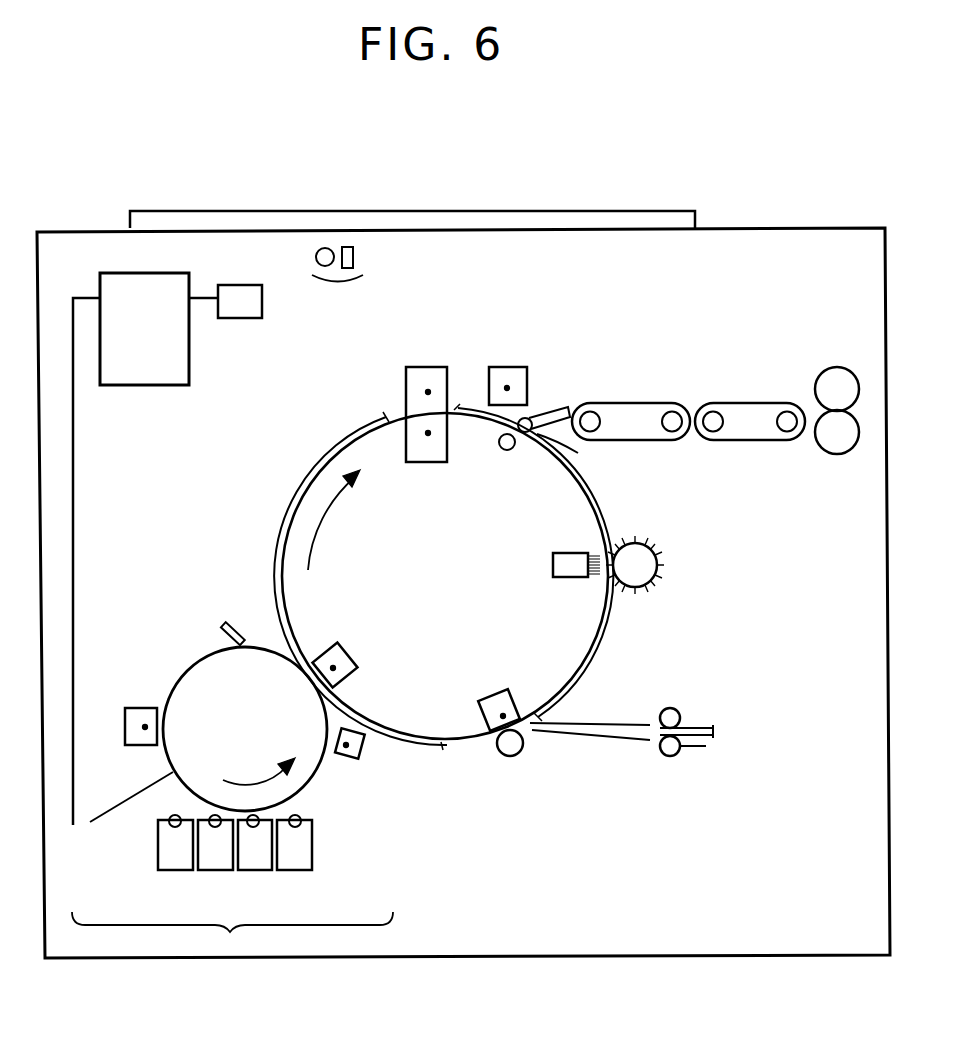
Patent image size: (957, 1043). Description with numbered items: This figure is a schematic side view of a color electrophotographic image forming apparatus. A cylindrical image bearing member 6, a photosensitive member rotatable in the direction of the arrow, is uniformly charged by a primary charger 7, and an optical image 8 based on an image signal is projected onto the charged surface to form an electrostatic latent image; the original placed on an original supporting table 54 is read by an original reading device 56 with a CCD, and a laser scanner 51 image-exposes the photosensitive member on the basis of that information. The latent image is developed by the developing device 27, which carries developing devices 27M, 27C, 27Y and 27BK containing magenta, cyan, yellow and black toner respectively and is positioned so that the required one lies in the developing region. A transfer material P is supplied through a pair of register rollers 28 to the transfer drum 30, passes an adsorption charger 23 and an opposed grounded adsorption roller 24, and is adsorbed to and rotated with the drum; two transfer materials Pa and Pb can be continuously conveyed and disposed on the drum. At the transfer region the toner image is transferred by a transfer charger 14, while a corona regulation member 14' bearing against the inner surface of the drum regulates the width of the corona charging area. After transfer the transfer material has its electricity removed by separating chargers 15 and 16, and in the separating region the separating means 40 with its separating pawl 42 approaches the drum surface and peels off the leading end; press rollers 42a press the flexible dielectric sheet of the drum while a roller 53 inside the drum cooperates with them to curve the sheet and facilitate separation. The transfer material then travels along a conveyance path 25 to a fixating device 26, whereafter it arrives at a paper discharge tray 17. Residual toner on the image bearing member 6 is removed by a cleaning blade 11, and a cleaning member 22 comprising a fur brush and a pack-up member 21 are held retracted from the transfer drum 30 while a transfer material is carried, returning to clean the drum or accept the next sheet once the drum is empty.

The image bearing member 6 is at (183, 668).
The primary charger 7 is at (128, 708).
The optical image 8 is at (136, 790).
The cleaning blade 11 is at (228, 623).
The transfer charger 14 is at (356, 652).
The corona regulation member 14' is at (363, 765).
The separating charger 15 is at (406, 447).
The separating charger 16 is at (432, 367).
The paper discharge tray 17 is at (512, 367).
The pack-up member 21 is at (553, 563).
The cleaning member 22 is at (660, 548).
The adsorption charger 23 is at (510, 694).
The grounded electrode (adsorption roller) 24 is at (520, 755).
The conveyance path 25 is at (808, 362).
The fixating device 26 is at (838, 376).
The developing device 27 is at (232, 884).
The developing device 27BK is at (158, 850).
The developing device 27Y is at (207, 862).
The developing device 27C is at (240, 868).
The developing device 27M is at (327, 863).
The register rollers 28 is at (676, 710).
The transfer drum 30 is at (600, 528).
The separating means 40 is at (553, 378).
The separating pawl 42 is at (560, 410).
The press roller 42a is at (578, 453).
The laser scanner 51 is at (243, 308).
The roller 53 is at (503, 450).
The original supporting table 54 is at (527, 228).
The original reading device 56 is at (341, 283).
The transfer material P is at (706, 724).
The transfer material Pa is at (598, 652).
The transfer material Pb is at (441, 748).